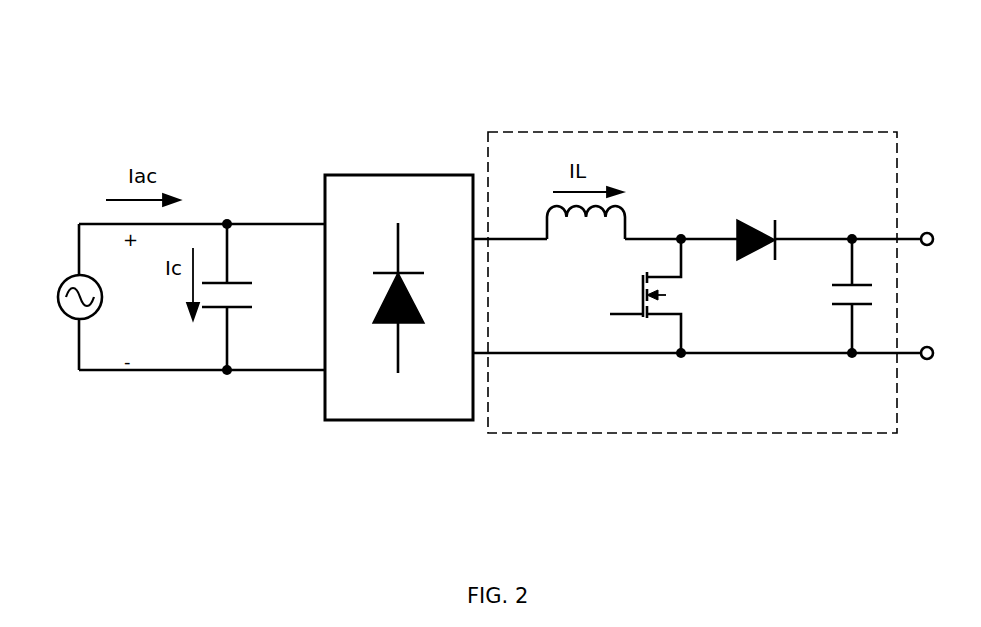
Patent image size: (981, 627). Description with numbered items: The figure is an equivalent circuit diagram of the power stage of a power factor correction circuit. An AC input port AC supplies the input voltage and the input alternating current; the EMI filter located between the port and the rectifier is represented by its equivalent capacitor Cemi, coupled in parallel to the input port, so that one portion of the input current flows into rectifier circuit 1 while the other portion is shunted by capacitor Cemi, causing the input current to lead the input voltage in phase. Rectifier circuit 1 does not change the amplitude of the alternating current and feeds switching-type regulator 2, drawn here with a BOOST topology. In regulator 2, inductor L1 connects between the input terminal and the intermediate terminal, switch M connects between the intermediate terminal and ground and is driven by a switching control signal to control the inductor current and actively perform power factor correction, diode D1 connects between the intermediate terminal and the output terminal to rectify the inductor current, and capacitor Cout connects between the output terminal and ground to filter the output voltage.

The rectifier circuit 1 is at (363, 175).
The switching-type regulator 2 is at (703, 235).
The AC input port AC is at (81, 297).
The capacitor Cemi is at (255, 297).
The inductor L1 is at (586, 238).
The switch M is at (648, 296).
The diode D1 is at (756, 219).
The capacitor Cout is at (821, 296).